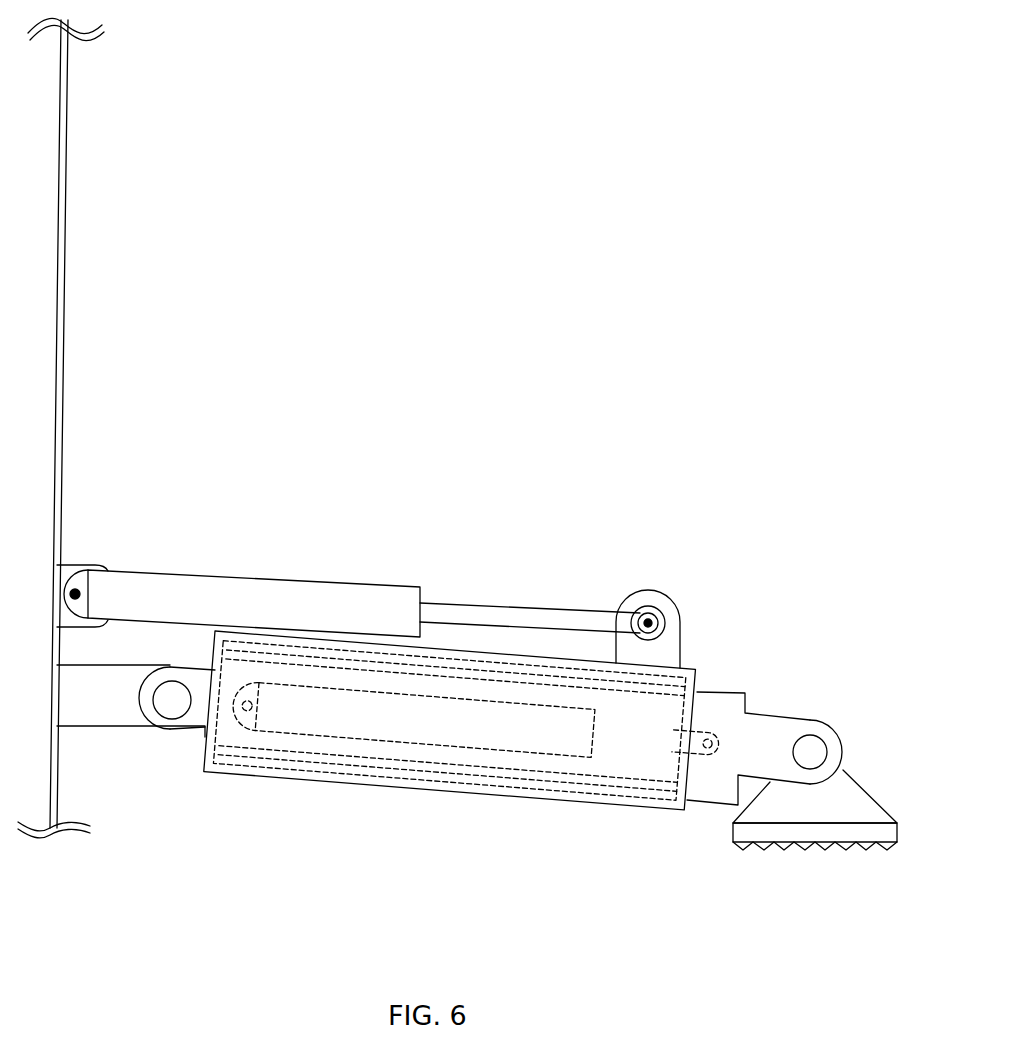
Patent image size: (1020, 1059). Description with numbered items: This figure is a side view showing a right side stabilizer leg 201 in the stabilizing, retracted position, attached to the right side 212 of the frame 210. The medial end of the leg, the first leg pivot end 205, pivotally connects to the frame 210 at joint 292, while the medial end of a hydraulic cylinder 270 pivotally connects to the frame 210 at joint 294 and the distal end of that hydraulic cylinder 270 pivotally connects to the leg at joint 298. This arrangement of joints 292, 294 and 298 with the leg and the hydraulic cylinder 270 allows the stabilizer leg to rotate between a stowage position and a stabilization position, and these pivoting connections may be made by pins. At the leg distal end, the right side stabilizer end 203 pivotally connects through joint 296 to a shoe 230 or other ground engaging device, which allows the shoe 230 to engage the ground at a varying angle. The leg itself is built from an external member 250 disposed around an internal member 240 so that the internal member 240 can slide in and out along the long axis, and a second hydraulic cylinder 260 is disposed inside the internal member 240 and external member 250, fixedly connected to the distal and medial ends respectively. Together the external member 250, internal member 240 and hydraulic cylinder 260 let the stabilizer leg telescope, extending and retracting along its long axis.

The right side stabilizer leg 201 is at (480, 277).
The right side stabilizer end 203 is at (805, 718).
The first leg pivot end 205 is at (140, 710).
The frame 210 is at (53, 836).
The right side of the frame 212 is at (66, 272).
The shoe 230 is at (843, 832).
The internal member 240 is at (747, 693).
The external member 250 is at (290, 780).
The hydraulic cylinder 260 is at (457, 733).
The hydraulic cylinder 270 is at (240, 600).
The joint 292 is at (168, 700).
The joint 294 is at (75, 588).
The joint 296 is at (810, 752).
The joint 298 is at (657, 617).